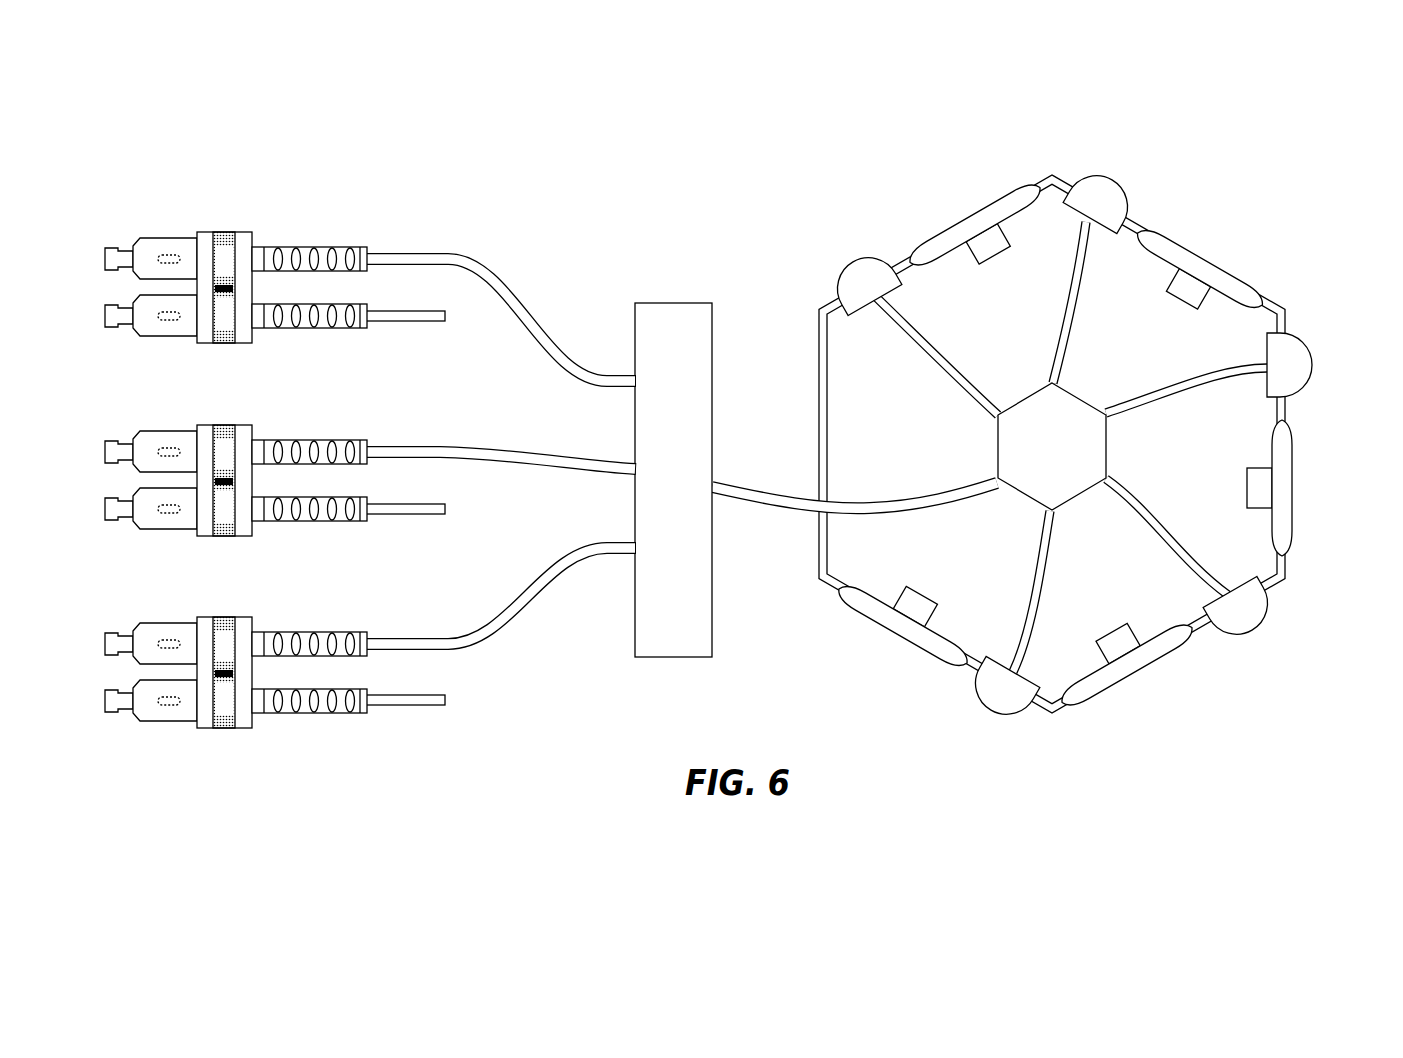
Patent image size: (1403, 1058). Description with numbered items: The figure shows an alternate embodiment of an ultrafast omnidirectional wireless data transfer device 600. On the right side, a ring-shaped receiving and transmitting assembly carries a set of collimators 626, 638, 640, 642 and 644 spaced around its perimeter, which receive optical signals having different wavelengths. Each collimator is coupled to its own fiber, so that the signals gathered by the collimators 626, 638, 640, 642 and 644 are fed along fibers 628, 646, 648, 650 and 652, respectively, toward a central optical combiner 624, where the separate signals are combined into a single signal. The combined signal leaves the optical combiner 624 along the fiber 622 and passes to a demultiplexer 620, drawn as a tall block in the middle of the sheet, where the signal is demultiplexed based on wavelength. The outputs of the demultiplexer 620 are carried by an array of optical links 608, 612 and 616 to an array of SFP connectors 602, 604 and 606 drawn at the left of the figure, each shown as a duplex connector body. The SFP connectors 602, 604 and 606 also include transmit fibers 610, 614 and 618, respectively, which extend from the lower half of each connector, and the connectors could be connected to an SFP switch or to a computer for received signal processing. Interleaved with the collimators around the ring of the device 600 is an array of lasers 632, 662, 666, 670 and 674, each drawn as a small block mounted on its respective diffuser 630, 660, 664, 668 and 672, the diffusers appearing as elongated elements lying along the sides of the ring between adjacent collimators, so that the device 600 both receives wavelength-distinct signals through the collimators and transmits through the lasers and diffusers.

The ultrafast omnidirectional wireless data transfer device 600 is at (846, 132).
The SFP connector 602 is at (232, 232).
The SFP connector 604 is at (220, 425).
The SFP connector 606 is at (220, 618).
The optical link 608 is at (405, 252).
The transmit fiber 610 is at (410, 323).
The optical link 612 is at (405, 447).
The transmit fiber 614 is at (410, 515).
The optical link 616 is at (405, 640).
The transmit fiber 618 is at (410, 708).
The demultiplexer 620 is at (675, 303).
The trunk optical cable 622 is at (788, 506).
The optical combiner 624 is at (1085, 497).
The collimator 626 is at (1105, 176).
The fiber 628 is at (1050, 333).
The diffuser 630 is at (1181, 312).
The laser 632 is at (1183, 302).
The collimator 638 is at (1312, 343).
The collimator 640 is at (1248, 630).
The collimator 642 is at (993, 708).
The collimator 644 is at (858, 262).
The fiber 646 is at (1128, 406).
The fiber 648 is at (1158, 508).
The fiber 650 is at (1028, 600).
The fiber 652 is at (942, 368).
The diffuser 660 is at (1299, 495).
The laser 662 is at (1257, 468).
The diffuser 664 is at (1110, 653).
The laser 666 is at (1120, 640).
The diffuser 668 is at (911, 617).
The laser 670 is at (893, 593).
The diffuser 672 is at (1003, 253).
The laser 674 is at (988, 258).